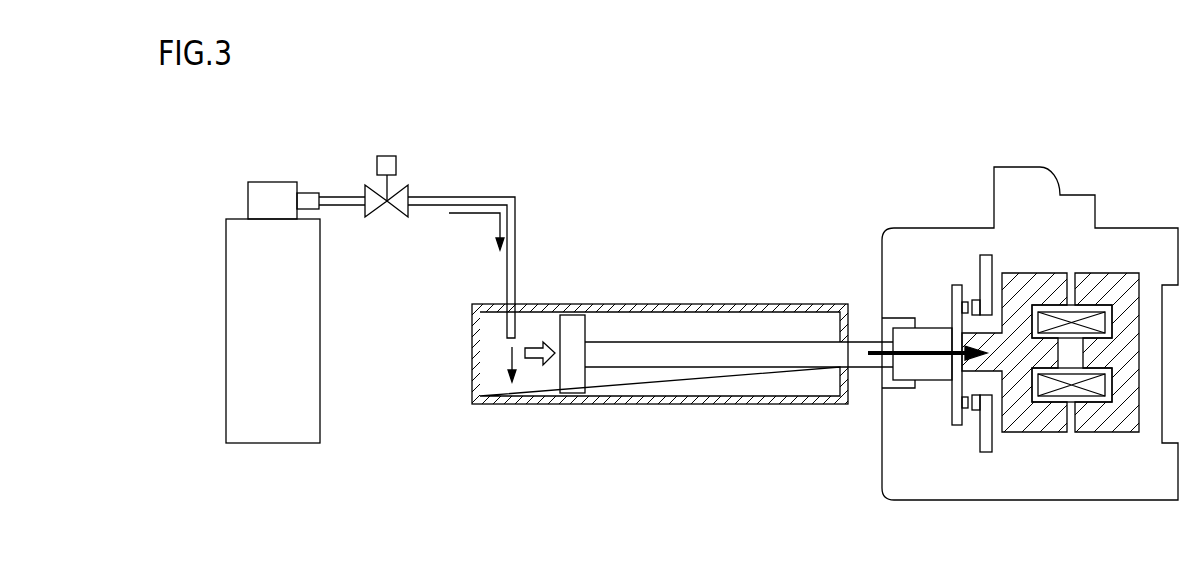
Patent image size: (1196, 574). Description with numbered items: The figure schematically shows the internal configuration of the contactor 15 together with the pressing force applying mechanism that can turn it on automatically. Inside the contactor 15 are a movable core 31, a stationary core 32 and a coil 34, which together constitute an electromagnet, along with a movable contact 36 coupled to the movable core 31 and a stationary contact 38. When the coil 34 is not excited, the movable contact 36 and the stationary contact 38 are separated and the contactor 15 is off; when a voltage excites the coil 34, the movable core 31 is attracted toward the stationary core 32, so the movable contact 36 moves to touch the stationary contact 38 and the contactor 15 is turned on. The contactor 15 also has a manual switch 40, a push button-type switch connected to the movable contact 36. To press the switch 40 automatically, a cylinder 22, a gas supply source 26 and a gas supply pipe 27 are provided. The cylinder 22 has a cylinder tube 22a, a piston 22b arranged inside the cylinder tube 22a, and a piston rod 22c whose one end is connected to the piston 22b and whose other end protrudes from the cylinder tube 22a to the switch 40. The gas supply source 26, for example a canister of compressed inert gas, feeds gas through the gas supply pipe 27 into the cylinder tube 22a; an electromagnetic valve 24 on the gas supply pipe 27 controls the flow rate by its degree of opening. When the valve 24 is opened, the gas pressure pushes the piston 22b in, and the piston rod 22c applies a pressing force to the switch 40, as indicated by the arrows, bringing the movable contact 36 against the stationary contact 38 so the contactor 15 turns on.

The contactor 15 is at (1048, 163).
The cylinder 22 is at (683, 285).
The cylinder tube 22a is at (483, 405).
The piston 22b is at (558, 380).
The piston rod 22c is at (660, 368).
The electromagnetic valve 24 is at (387, 213).
The gas supply source 26 is at (272, 182).
The gas supply pipe 27 is at (456, 197).
The movable core 31 is at (1048, 433).
The stationary core 32 is at (1110, 433).
The coil 34 is at (1087, 305).
The movable contact 36 is at (952, 403).
The stationary contact 38 is at (992, 445).
The manual switch 40 is at (903, 365).